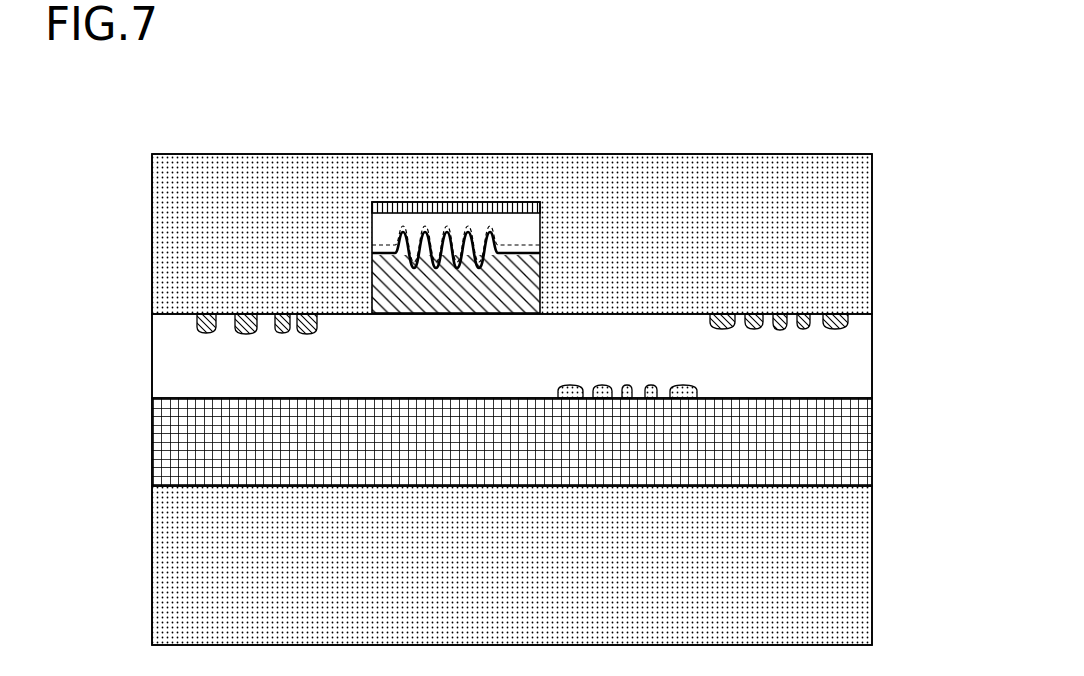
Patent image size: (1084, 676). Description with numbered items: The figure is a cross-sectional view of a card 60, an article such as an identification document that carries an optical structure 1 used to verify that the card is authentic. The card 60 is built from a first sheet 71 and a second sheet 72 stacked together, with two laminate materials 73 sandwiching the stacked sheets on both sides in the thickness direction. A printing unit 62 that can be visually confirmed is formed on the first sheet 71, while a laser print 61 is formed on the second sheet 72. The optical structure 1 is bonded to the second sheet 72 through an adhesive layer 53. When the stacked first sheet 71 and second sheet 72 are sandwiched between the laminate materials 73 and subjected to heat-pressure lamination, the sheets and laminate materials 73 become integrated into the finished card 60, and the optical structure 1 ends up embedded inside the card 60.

The card 60 is at (855, 123).
The laminate materials 73 is at (872, 224).
The second sheet 72 is at (850, 352).
The first sheet 71 is at (872, 442).
The laser print 61 is at (200, 326).
The printing unit 62 is at (700, 388).
The optical structure 1 is at (474, 200).
The adhesive layer 53 is at (383, 282).